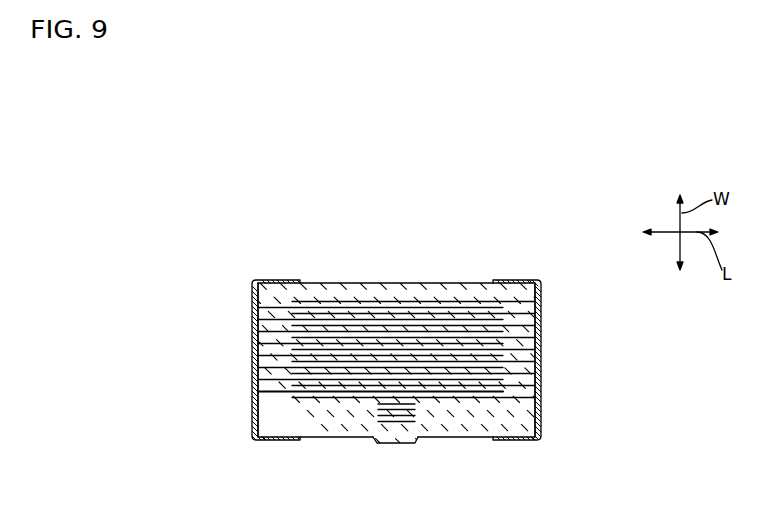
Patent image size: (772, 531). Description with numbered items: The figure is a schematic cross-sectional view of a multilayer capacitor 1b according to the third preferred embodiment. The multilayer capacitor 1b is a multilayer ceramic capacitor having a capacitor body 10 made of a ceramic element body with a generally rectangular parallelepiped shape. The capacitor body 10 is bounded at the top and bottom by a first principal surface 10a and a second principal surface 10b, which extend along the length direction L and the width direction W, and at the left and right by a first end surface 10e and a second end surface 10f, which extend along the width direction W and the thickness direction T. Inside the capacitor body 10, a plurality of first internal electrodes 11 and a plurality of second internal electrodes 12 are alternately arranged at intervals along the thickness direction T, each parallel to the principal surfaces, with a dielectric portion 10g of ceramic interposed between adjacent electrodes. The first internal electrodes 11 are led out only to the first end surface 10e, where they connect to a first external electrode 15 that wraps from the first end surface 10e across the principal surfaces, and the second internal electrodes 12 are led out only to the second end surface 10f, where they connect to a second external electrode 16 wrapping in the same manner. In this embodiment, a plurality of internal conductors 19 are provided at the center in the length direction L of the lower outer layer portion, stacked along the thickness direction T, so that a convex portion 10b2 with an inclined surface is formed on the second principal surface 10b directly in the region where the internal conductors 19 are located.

The multilayer capacitor 1b is at (557, 245).
The capacitor body 10 is at (452, 284).
The first principal surface 10a is at (328, 284).
The second principal surface 10b is at (330, 437).
The convex portion 10b2 is at (397, 444).
The first end surface 10e is at (255, 395).
The second end surface 10f is at (540, 392).
The dielectric portion 10g is at (395, 301).
The first internal electrodes 11 is at (318, 394).
The second internal electrodes 12 is at (437, 398).
The first external electrode 15 is at (252, 352).
The second external electrode 16 is at (541, 334).
The internal conductors 19 is at (415, 423).